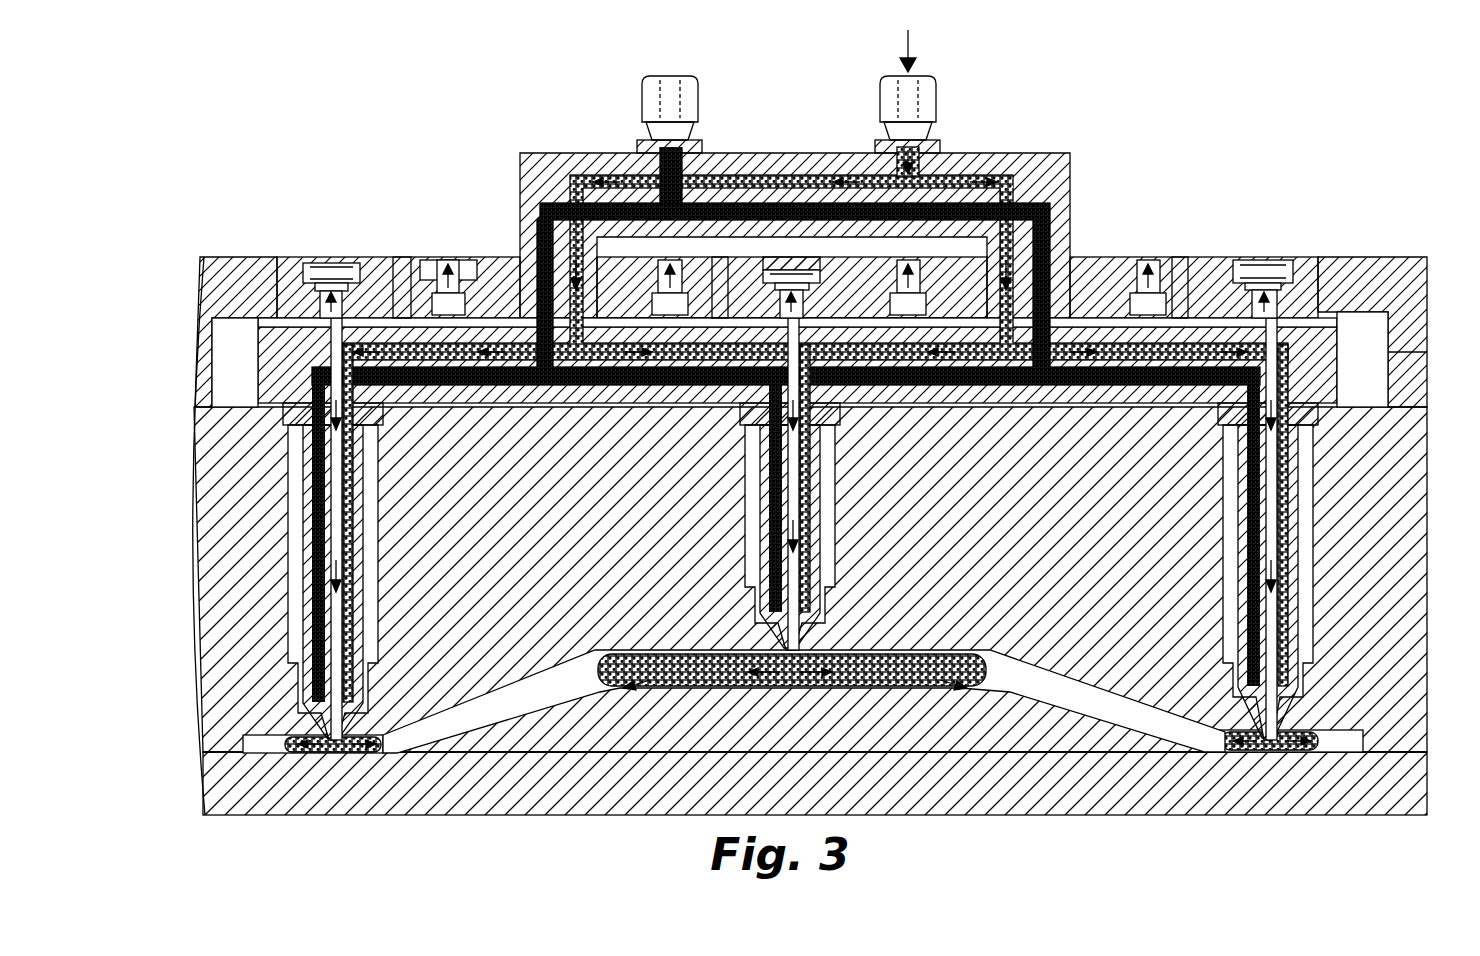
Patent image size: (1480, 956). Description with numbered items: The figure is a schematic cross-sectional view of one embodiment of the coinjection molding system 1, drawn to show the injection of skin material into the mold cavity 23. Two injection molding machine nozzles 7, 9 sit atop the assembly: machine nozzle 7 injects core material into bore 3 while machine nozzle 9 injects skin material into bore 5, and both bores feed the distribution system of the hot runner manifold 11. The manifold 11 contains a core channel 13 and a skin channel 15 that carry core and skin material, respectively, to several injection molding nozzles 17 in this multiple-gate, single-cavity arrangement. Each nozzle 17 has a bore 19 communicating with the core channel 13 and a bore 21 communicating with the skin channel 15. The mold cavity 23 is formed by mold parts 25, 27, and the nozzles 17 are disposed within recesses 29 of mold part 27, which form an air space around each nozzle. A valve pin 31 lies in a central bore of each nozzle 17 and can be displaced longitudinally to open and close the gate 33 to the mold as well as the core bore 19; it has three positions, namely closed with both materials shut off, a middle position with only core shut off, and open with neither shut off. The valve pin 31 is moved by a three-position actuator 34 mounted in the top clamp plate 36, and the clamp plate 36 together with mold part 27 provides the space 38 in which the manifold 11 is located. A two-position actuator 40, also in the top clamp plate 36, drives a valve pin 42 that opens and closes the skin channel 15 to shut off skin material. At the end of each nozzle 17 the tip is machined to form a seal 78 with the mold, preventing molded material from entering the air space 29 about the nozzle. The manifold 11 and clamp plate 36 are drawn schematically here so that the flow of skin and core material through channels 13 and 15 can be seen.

The coinjection molding system 1 is at (812, 450).
The bore 3 is at (648, 152).
The bore 5 is at (938, 152).
The injection molding machine nozzle 7 is at (700, 108).
The injection molding machine nozzle 9 is at (944, 108).
The hot runner manifold 11 is at (258, 330).
The core distribution channel 13 is at (537, 215).
The skin distribution channel 15 is at (1004, 195).
The injection molding nozzle 17 is at (302, 550).
The core bore 19 is at (315, 510).
The skin bore 21 is at (347, 627).
The mold cavity 23 is at (522, 700).
The mold part 25 is at (445, 810).
The mold part 27 is at (210, 727).
The recess 29 is at (292, 460).
The valve pin 31 is at (333, 597).
The gate 33 is at (333, 742).
The three-position actuator 34 is at (303, 260).
The top clamp plate 36 is at (1378, 262).
The space 38 is at (222, 350).
The two-position actuator 40 is at (438, 260).
The valve pin 42 is at (403, 258).
The seal 78 is at (322, 722).